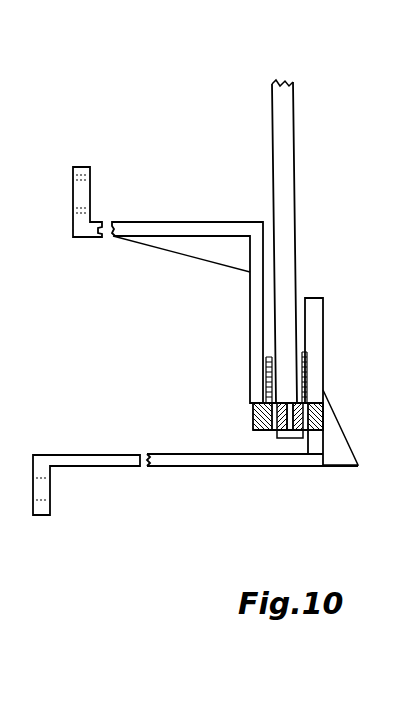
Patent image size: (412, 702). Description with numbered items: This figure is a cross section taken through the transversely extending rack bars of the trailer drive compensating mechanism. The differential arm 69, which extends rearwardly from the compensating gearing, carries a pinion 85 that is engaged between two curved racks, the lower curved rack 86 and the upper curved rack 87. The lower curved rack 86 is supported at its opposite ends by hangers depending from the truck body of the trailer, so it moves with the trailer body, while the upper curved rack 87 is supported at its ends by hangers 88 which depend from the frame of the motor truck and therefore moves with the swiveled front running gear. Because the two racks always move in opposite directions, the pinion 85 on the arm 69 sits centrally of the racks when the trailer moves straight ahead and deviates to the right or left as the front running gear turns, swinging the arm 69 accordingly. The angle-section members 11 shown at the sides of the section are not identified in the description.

The rail 11 is at (90, 192).
The hanger 88 is at (167, 230).
The differential arm 69 is at (297, 270).
The lower curved rack 86 is at (323, 410).
The upper curved rack 87 is at (252, 415).
The pinion 85 is at (277, 434).